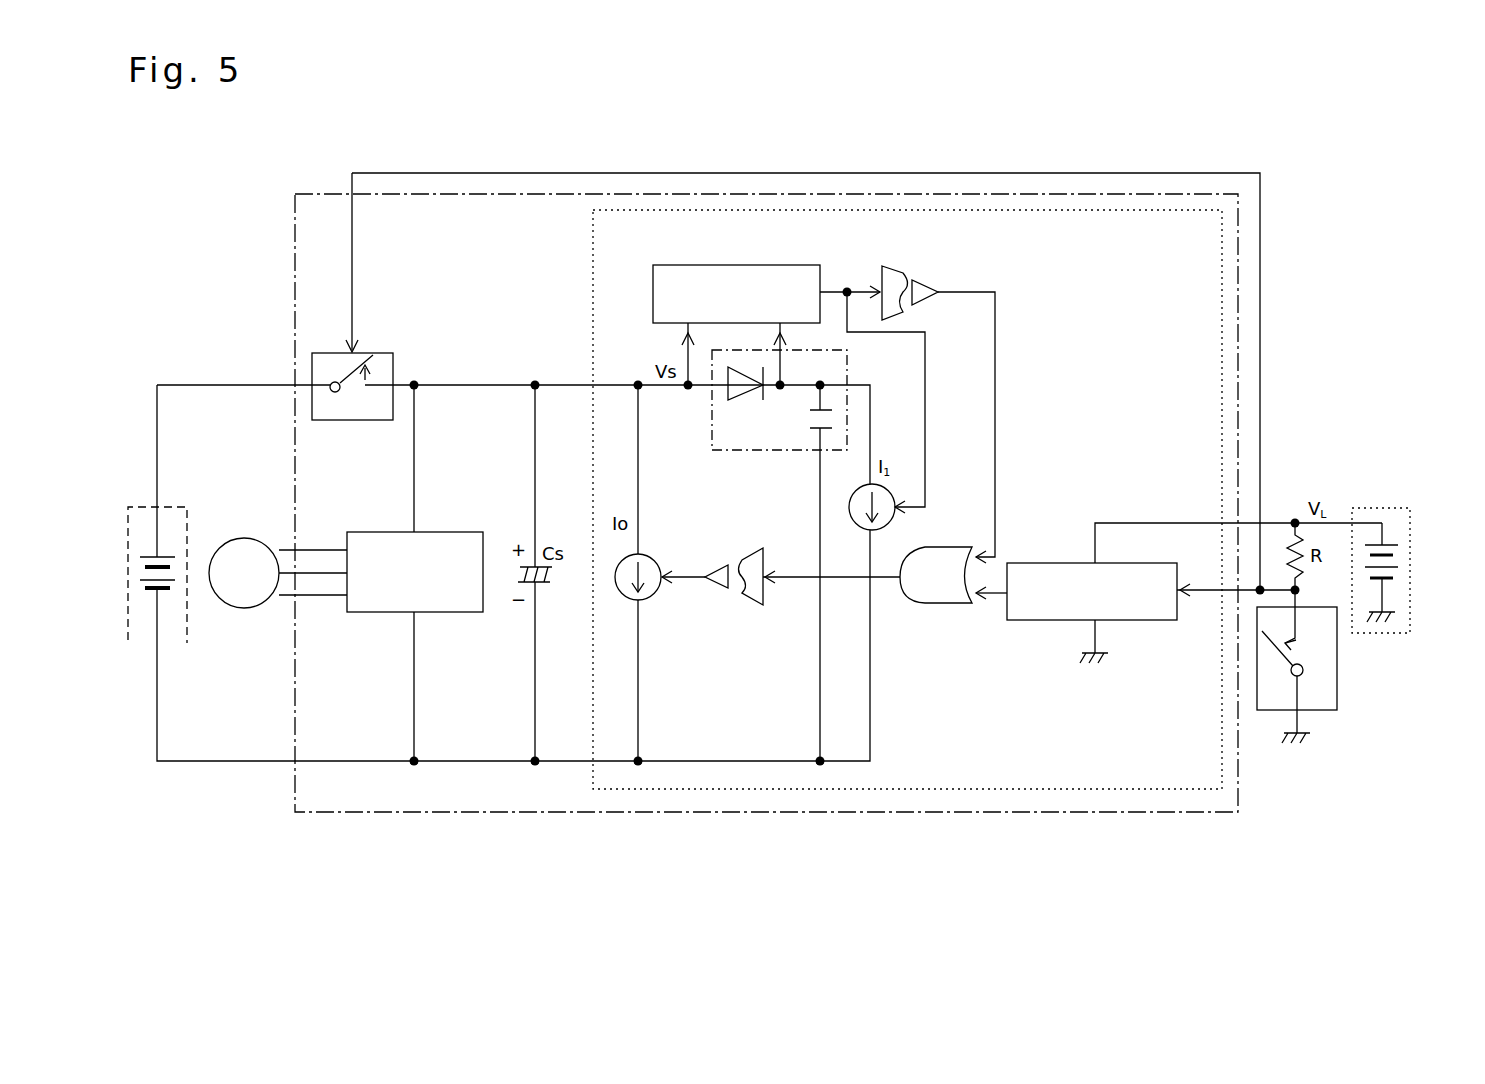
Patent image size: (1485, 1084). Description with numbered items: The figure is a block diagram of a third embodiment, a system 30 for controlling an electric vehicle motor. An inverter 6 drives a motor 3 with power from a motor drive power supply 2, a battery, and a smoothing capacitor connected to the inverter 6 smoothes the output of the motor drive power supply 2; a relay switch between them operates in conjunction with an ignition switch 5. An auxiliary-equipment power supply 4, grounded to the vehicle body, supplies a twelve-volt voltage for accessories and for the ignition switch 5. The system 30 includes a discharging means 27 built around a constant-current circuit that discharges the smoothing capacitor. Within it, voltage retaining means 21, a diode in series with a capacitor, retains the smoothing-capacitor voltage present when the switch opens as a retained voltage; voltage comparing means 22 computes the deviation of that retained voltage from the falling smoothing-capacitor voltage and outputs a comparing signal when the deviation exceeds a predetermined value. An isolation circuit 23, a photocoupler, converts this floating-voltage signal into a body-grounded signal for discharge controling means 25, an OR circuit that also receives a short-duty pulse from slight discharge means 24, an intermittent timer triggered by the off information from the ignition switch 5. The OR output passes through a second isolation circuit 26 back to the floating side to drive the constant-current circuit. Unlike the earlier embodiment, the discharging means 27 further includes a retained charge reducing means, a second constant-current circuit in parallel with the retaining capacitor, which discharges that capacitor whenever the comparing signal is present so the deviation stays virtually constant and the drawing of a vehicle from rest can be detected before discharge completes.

The system for controlling an electric vehicle motor 30 is at (525, 194).
The discharging means 27 is at (947, 783).
The motor drive power supply 2 is at (190, 614).
The motor 3 is at (249, 537).
The inverter 6 is at (457, 530).
The voltage retaining means 21 is at (747, 450).
The voltage comparing means 22 is at (752, 264).
The isolation circuit 23 is at (902, 273).
The isolation circuit 26 is at (745, 605).
The discharge controling means 25 is at (945, 603).
The slight discharge means 24 is at (1118, 563).
The auxiliary-equipment power supply 4 is at (1380, 503).
The ignition switch 5 is at (1337, 687).